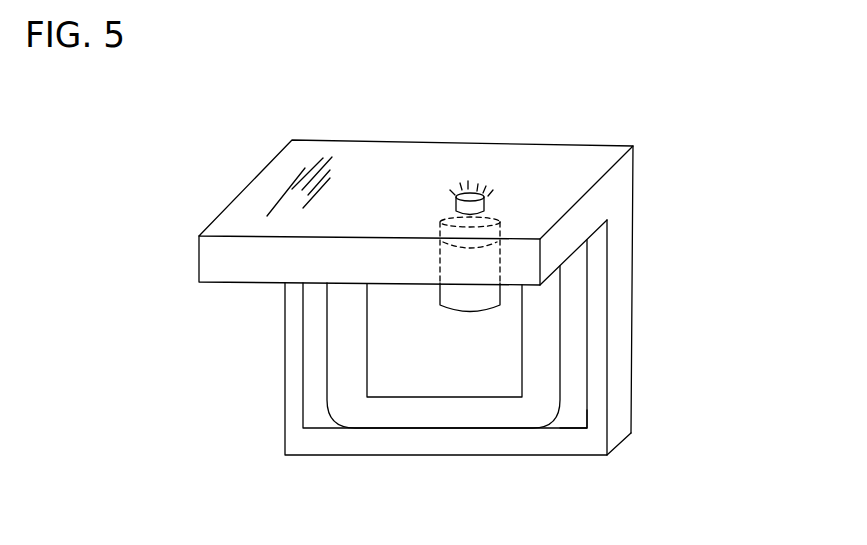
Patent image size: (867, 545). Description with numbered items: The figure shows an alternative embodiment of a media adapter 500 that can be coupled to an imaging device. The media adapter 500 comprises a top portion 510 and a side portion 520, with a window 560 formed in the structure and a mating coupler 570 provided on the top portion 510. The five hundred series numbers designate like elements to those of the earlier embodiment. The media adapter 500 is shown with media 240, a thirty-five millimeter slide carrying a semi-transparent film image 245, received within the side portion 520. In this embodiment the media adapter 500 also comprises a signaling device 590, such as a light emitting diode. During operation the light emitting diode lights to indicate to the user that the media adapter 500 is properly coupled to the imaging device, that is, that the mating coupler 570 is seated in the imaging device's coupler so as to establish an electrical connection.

The media adapter 500 is at (670, 125).
The top portion 510 is at (197, 267).
The side portion 520 is at (388, 457).
The media 240 is at (325, 373).
The semi-transparent film image 245 is at (427, 329).
The window 560 is at (560, 427).
The signaling device 590 is at (455, 204).
The mating coupler 570 is at (488, 203).